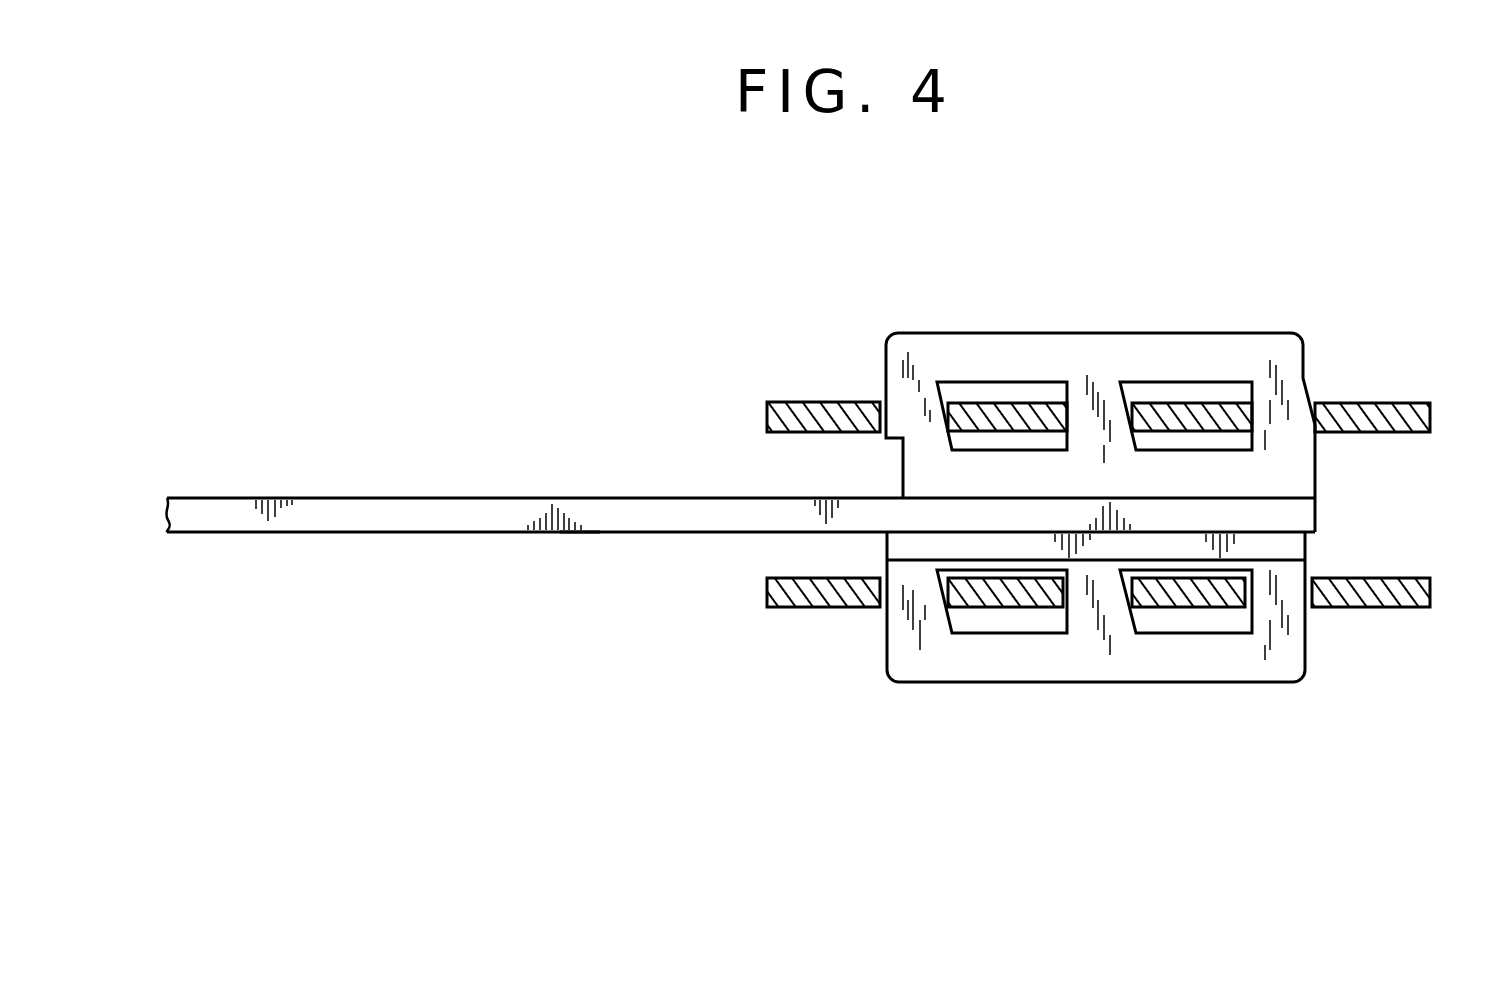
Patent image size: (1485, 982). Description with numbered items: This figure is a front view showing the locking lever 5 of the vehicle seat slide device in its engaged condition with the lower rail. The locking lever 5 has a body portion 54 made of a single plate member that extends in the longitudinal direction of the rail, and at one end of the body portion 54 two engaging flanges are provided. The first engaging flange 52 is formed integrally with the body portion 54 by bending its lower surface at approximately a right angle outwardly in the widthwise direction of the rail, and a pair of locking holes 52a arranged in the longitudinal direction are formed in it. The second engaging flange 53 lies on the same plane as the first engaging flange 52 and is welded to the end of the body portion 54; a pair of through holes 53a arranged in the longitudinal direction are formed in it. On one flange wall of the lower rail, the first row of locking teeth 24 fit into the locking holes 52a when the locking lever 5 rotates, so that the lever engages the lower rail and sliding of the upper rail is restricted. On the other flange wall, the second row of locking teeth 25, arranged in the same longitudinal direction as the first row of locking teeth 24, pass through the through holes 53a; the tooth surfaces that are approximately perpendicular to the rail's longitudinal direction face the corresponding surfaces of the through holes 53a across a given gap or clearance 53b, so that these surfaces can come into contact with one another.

The locking lever 5 is at (548, 476).
The first row of locking teeth 24 is at (1411, 380).
The second row of locking teeth 25 is at (1397, 634).
The first engaging flange 52 is at (1250, 345).
The locking holes 52a is at (995, 382).
The second engaging flange 53 is at (1268, 660).
The through holes 53a is at (997, 633).
The gap or clearance 53b is at (1063, 590).
The body portion 54 is at (582, 527).